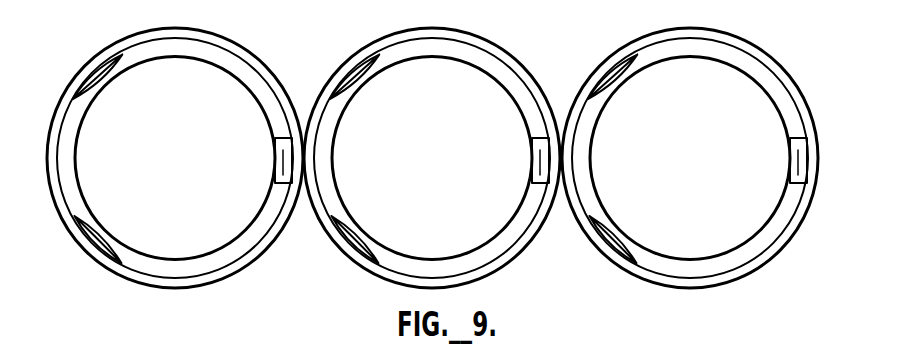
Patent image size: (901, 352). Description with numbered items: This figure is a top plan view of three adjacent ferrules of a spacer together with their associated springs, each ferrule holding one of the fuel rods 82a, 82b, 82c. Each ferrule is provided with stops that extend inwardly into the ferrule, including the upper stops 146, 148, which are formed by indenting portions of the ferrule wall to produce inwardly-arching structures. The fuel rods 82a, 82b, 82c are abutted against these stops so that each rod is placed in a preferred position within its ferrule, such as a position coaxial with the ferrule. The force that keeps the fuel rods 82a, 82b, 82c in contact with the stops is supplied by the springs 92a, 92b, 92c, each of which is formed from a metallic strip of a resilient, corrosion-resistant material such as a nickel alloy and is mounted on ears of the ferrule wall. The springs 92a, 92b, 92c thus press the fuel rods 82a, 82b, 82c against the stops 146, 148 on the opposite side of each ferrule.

The fuel rod 82a is at (235, 75).
The fuel rod 82b is at (493, 73).
The fuel rod 82c is at (735, 67).
The spring 92a is at (280, 138).
The spring 92b is at (542, 138).
The spring 92c is at (800, 152).
The upper stop 146 is at (93, 248).
The upper stop 148 is at (94, 66).